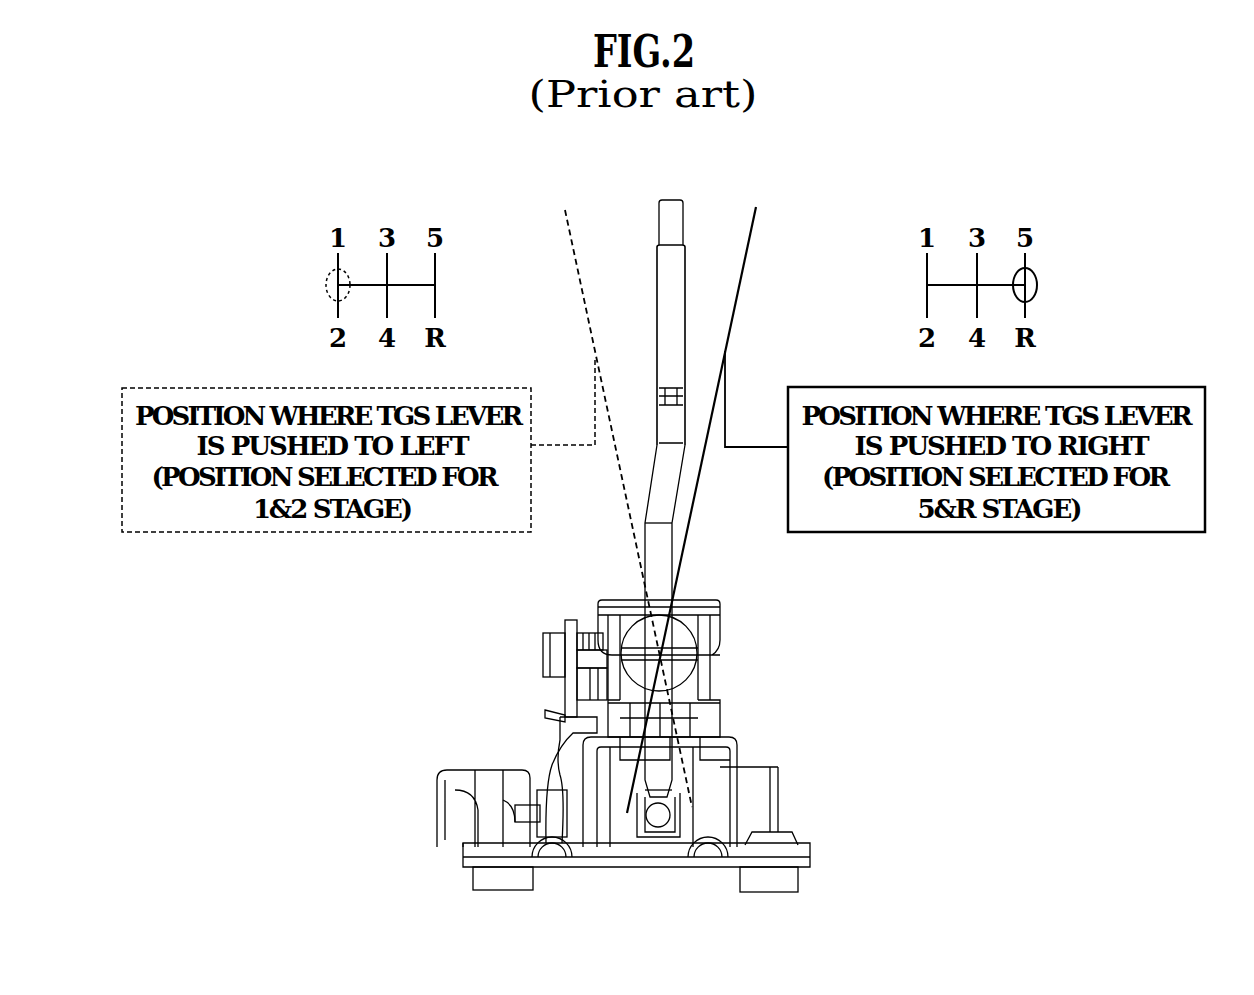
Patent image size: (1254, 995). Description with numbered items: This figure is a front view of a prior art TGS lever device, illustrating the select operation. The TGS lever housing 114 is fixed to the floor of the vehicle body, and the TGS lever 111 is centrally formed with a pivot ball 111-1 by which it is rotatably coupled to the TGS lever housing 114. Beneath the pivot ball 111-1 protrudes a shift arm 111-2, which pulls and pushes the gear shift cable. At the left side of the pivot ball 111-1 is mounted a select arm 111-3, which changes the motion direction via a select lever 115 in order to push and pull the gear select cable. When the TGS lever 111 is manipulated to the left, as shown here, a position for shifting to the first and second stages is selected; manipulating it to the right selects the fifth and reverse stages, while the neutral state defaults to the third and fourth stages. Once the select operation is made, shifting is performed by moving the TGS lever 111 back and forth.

The TGS lever 111 is at (678, 270).
The pivot ball 111-1 is at (690, 661).
The shift arm 111-2 is at (680, 807).
The select arm 111-3 is at (597, 633).
The TGS lever housing 114 is at (713, 622).
The select lever 115 is at (567, 744).